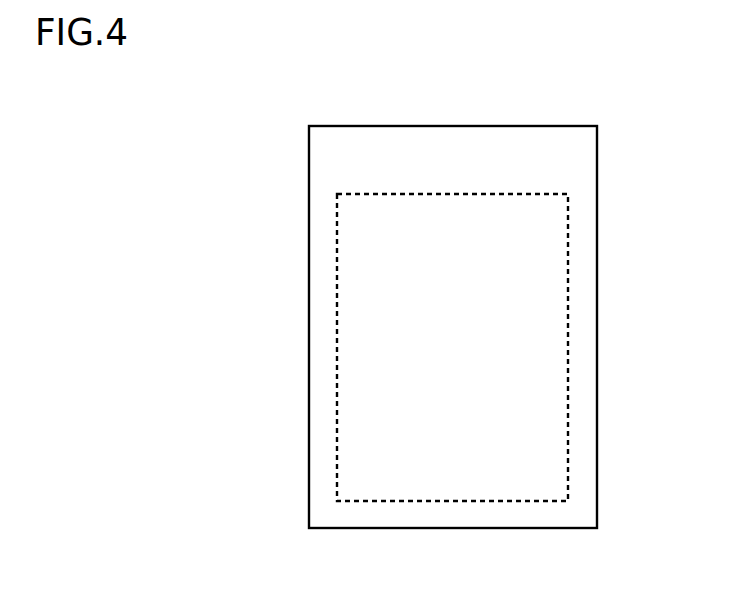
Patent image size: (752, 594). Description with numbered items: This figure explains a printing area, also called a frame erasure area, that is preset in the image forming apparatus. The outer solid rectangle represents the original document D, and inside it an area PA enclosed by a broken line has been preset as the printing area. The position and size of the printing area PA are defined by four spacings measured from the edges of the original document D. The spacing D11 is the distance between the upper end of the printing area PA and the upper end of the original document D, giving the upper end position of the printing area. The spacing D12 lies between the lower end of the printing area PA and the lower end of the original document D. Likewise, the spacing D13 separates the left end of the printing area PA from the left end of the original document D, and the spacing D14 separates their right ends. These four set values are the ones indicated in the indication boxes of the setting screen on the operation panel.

The original document D is at (317, 125).
The printing area PA is at (562, 190).
The spacing between upper ends D11 is at (385, 194).
The spacing between lower ends D12 is at (385, 480).
The spacing between left ends D13 is at (358, 411).
The spacing between right ends D14 is at (545, 411).